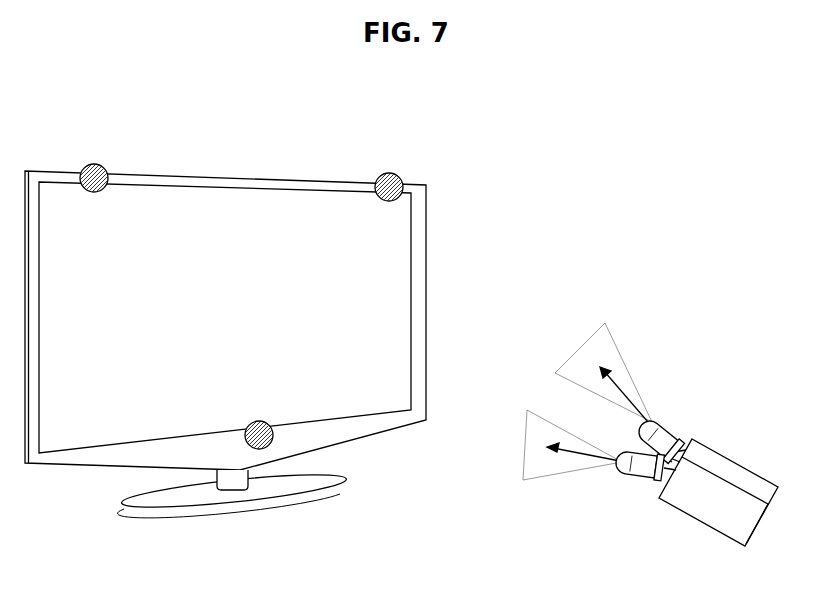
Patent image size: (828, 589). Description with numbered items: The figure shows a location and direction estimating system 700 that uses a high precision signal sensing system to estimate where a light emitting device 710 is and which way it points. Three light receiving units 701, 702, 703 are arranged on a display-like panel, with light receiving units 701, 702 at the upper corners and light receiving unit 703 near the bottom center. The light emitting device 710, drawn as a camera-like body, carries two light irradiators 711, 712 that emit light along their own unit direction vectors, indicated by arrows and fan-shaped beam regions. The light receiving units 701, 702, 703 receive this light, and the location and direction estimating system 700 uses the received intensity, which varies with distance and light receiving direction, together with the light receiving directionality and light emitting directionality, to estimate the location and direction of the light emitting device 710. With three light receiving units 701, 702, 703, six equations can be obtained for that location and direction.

The location and direction estimating system 700 is at (257, 150).
The light receiving unit 701 is at (96, 164).
The light receiving unit 702 is at (389, 173).
The light receiving unit 703 is at (260, 421).
The light emitting device 710 is at (731, 438).
The light irradiator 711 is at (652, 424).
The light irradiator 712 is at (626, 466).